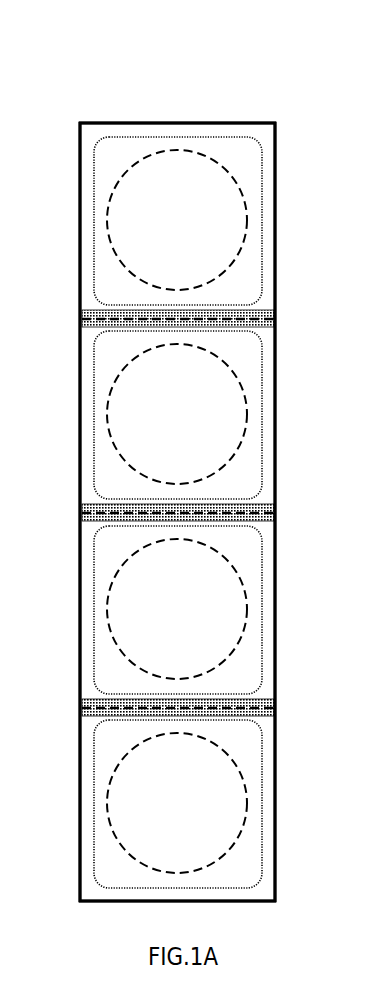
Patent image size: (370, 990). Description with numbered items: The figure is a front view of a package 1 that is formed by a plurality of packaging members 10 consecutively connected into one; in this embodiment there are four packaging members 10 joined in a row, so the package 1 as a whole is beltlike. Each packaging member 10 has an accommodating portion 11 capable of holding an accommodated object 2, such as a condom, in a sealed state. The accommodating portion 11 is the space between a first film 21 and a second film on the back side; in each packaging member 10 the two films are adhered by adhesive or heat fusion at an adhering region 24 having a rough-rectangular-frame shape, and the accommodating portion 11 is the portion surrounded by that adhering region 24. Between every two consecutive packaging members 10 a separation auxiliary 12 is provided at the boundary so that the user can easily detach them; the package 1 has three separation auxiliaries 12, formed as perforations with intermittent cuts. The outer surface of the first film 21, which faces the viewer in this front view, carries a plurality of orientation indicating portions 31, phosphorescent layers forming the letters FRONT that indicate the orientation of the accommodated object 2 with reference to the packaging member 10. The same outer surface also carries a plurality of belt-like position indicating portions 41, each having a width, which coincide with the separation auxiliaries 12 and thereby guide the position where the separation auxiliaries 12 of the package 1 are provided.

The package 1 is at (152, 99).
The packaging member 10 is at (80, 167).
The accommodating portion 11 is at (97, 196).
The separation auxiliary 12 is at (84, 311).
The accommodated object 2 is at (244, 200).
The first film 21 is at (218, 130).
The adhering region 24 is at (263, 132).
The orientation indicating portion 31 is at (233, 264).
The position indicating portion 41 is at (270, 312).